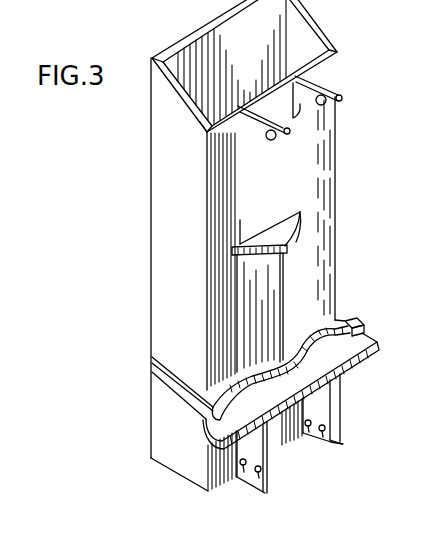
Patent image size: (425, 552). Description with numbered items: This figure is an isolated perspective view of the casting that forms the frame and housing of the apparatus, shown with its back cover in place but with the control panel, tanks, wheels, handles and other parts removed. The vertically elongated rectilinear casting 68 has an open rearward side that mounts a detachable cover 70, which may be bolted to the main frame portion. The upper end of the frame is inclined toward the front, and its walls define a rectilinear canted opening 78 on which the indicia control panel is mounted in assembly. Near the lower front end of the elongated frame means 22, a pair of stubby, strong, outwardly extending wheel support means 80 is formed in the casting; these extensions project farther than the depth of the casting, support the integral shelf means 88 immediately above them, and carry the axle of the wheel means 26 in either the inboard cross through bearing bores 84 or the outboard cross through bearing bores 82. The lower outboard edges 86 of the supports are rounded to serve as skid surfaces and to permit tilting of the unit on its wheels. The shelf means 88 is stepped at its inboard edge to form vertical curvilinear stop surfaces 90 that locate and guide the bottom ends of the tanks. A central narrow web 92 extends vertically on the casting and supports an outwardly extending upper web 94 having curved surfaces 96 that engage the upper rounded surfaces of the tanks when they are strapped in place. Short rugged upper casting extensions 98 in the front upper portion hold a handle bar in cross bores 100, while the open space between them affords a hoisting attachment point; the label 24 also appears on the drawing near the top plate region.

The elongated frame means 22 is at (144, 236).
The hopper plate 24 is at (259, 66).
The wheel means 26 is at (64, 4).
The casting 68 is at (328, 167).
The detachable cover 70 is at (234, 37).
The canted opening 78 is at (198, 96).
The wheel support means 80 is at (263, 449).
The outboard cross through bearing bores 82 is at (259, 474).
The inboard cross through bearing bores 84 is at (243, 468).
The lower outboard edges 86 is at (343, 443).
The shelf means 88 is at (363, 343).
The vertical curvilinear stop surfaces 90 is at (350, 322).
The central narrow web 92 is at (284, 298).
The upper web 94 is at (284, 249).
The curved surfaces 96 is at (298, 212).
The upper casting extensions 98 is at (270, 141).
The cross bores 100 is at (273, 141).